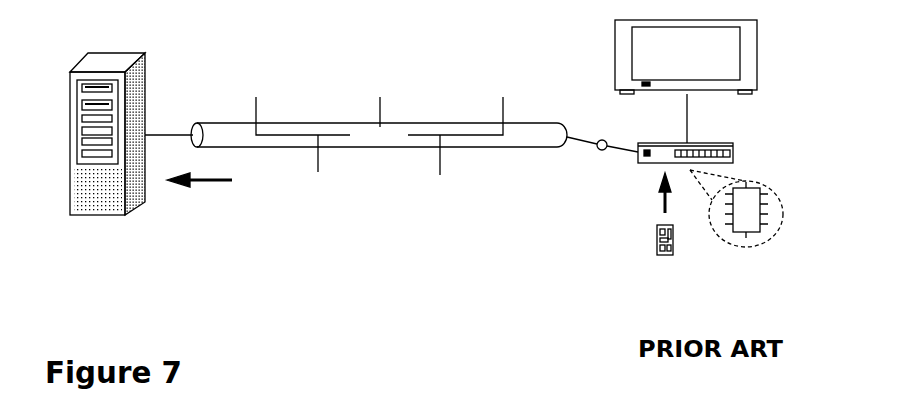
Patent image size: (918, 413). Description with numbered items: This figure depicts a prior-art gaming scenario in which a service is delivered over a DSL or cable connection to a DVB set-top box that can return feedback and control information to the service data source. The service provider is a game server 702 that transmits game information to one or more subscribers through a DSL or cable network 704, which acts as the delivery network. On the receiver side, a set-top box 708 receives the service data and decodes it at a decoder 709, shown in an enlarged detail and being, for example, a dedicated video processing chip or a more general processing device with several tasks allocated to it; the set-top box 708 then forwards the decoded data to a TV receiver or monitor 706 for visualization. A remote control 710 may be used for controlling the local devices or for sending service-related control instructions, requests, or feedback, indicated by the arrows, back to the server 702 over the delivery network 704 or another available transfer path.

The game server 702 is at (145, 111).
The DSL or cable network 704 is at (379, 124).
The TV receiver or monitor 706 is at (648, 74).
The set-top box 708 is at (647, 129).
The decoder 709 is at (739, 230).
The remote control 710 is at (625, 214).